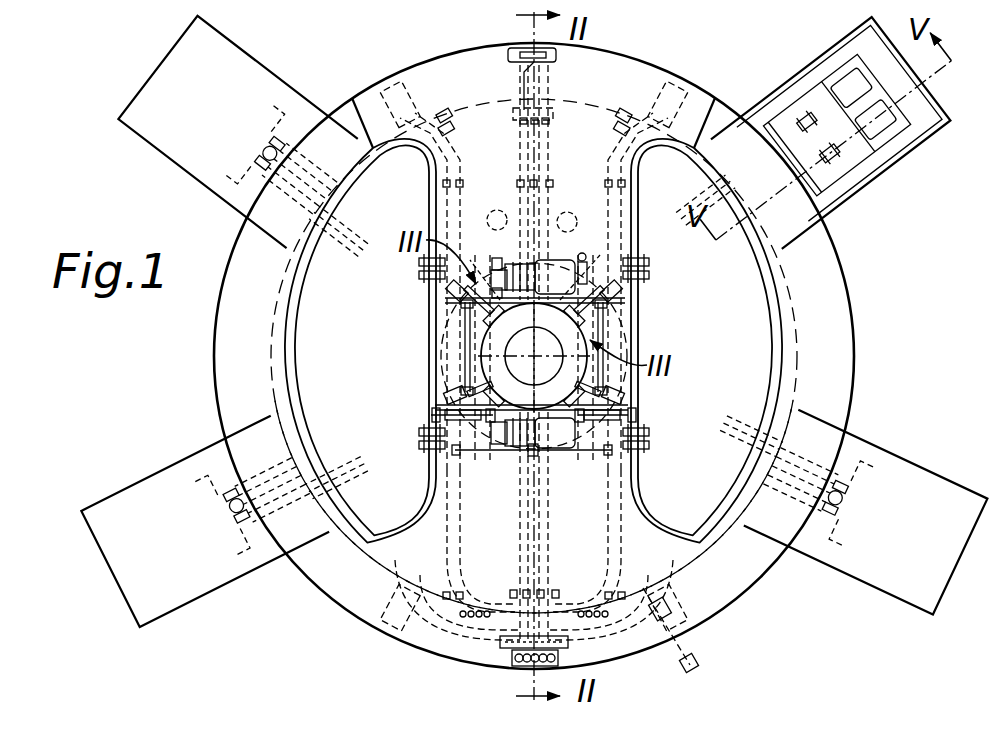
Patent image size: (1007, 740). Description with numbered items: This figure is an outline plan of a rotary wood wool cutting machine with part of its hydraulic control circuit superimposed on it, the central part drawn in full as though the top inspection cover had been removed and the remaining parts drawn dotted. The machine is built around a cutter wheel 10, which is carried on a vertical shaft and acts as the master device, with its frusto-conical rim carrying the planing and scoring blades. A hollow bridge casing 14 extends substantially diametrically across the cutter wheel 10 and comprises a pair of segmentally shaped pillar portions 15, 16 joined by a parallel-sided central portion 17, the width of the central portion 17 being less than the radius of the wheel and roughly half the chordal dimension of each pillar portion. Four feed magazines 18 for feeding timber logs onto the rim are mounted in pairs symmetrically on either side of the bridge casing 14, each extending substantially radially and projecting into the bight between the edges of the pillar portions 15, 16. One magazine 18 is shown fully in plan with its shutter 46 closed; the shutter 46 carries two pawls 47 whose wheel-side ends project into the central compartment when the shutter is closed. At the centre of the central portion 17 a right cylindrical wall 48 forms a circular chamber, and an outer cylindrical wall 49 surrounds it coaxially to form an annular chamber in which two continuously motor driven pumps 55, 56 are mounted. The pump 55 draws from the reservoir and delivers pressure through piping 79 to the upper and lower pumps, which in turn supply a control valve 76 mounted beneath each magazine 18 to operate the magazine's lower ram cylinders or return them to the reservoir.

The cutter wheel 10 is at (750, 338).
The hollow bridge casing 14 is at (647, 291).
The pillar portion 15 is at (386, 625).
The pillar portion 16 is at (613, 70).
The central portion 17 is at (640, 242).
The feed magazine 18 is at (912, 162).
The shutter 46 is at (810, 102).
The pawl 47 is at (830, 153).
The right cylindrical wall 48 is at (645, 418).
The outer cylindrical wall 49 is at (648, 390).
The motor driven pump 55 is at (493, 278).
The motor driven pump 56 is at (585, 447).
The control valve 76 is at (558, 280).
The piping 79 is at (467, 340).